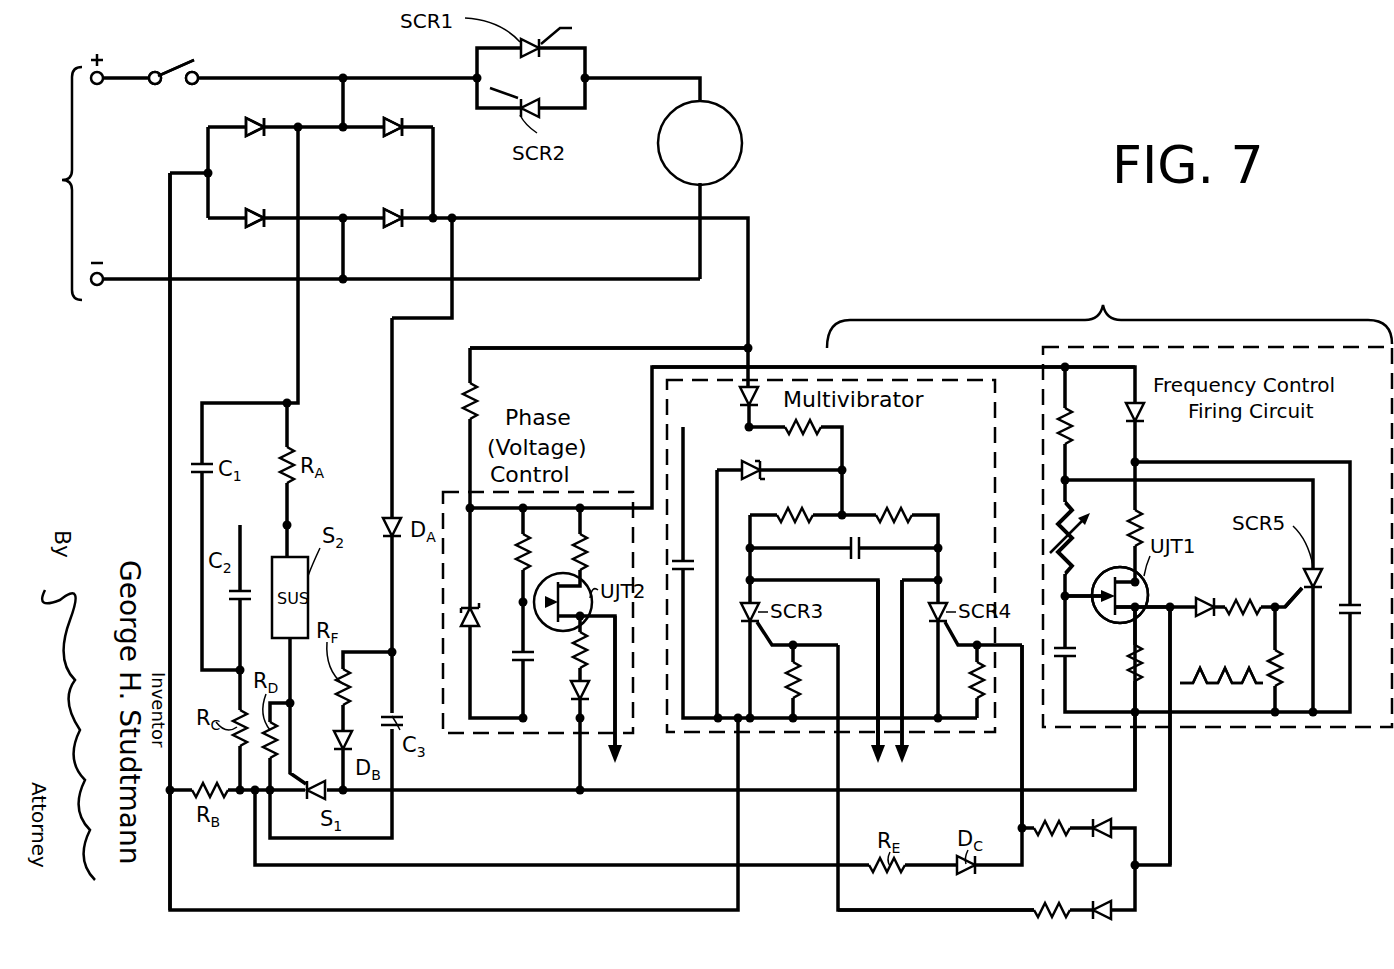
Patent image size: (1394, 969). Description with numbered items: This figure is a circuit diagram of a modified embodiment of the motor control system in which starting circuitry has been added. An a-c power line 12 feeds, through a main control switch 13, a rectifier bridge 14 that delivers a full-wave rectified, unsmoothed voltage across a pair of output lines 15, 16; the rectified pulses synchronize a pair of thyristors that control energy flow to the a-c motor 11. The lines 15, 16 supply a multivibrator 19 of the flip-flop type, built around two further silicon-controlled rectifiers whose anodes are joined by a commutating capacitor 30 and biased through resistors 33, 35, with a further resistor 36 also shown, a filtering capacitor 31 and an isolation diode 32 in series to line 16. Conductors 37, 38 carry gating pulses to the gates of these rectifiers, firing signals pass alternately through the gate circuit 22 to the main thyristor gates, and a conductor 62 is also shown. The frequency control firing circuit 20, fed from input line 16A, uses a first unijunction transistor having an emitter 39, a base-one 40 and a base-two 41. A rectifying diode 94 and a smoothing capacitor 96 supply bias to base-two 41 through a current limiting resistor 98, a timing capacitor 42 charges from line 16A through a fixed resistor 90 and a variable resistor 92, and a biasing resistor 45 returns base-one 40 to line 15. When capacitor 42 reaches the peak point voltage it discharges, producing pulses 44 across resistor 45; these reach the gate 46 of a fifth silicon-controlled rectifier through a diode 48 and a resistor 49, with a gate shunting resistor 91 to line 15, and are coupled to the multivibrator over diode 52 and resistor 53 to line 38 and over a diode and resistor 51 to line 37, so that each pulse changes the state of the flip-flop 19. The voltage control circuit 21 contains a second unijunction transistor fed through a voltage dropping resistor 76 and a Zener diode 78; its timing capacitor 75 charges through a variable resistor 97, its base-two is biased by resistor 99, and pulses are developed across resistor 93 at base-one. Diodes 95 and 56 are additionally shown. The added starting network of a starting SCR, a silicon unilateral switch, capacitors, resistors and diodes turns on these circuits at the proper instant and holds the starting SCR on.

The electric a-c motor 11 is at (738, 118).
The a-c power line 12 is at (715, 207).
The main control switch 13 is at (166, 72).
The rectifier bridge 14 is at (360, 189).
The output line 15 is at (170, 347).
The output line 16 is at (596, 348).
The input line 16A is at (915, 367).
The multivibrator 19 is at (831, 556).
The frequency control firing circuit 20 is at (1217, 537).
The voltage control circuit 21 is at (538, 597).
The gate circuit 22 is at (757, 685).
The commutating capacitor 30 is at (847, 552).
The filtering capacitor 31 is at (692, 558).
The isolation diode 32 is at (738, 396).
The current limiting and biasing resistor 33 is at (795, 432).
The current limiting and biasing resistor 35 is at (900, 510).
The resistor 36 is at (790, 510).
The conductor 37 is at (945, 912).
The conductor 38 is at (1022, 752).
The emitter 39 is at (1078, 588).
The base-one 40 is at (1133, 622).
The base-two 41 is at (1150, 600).
The timing capacitor 42 is at (1074, 652).
The pulse signal 44 is at (1196, 680).
The biasing resistor 45 is at (1131, 672).
The gate 46 is at (1294, 603).
The diode 48 is at (1203, 598).
The resistor 49 is at (1233, 612).
The resistor 51 is at (1050, 910).
The diode 52 is at (1110, 822).
The resistor 53 is at (1046, 830).
The diode 56 is at (1113, 910).
The conductor 62 is at (877, 636).
The timing capacitor 75 is at (518, 664).
The voltage dropping resistor 76 is at (463, 398).
The Zener diode 78 is at (474, 605).
The fixed resistor 90 is at (1069, 420).
The gate shunting resistor 91 is at (1279, 655).
The variable resistor 92 is at (1073, 514).
The resistor 93 is at (576, 650).
The rectifying diode 94 is at (1134, 404).
The diode 95 is at (570, 690).
The smoothing capacitor 96 is at (1358, 612).
The variable resistor 97 is at (530, 552).
The current limiting resistor 98 is at (1142, 522).
The resistor 99 is at (588, 552).